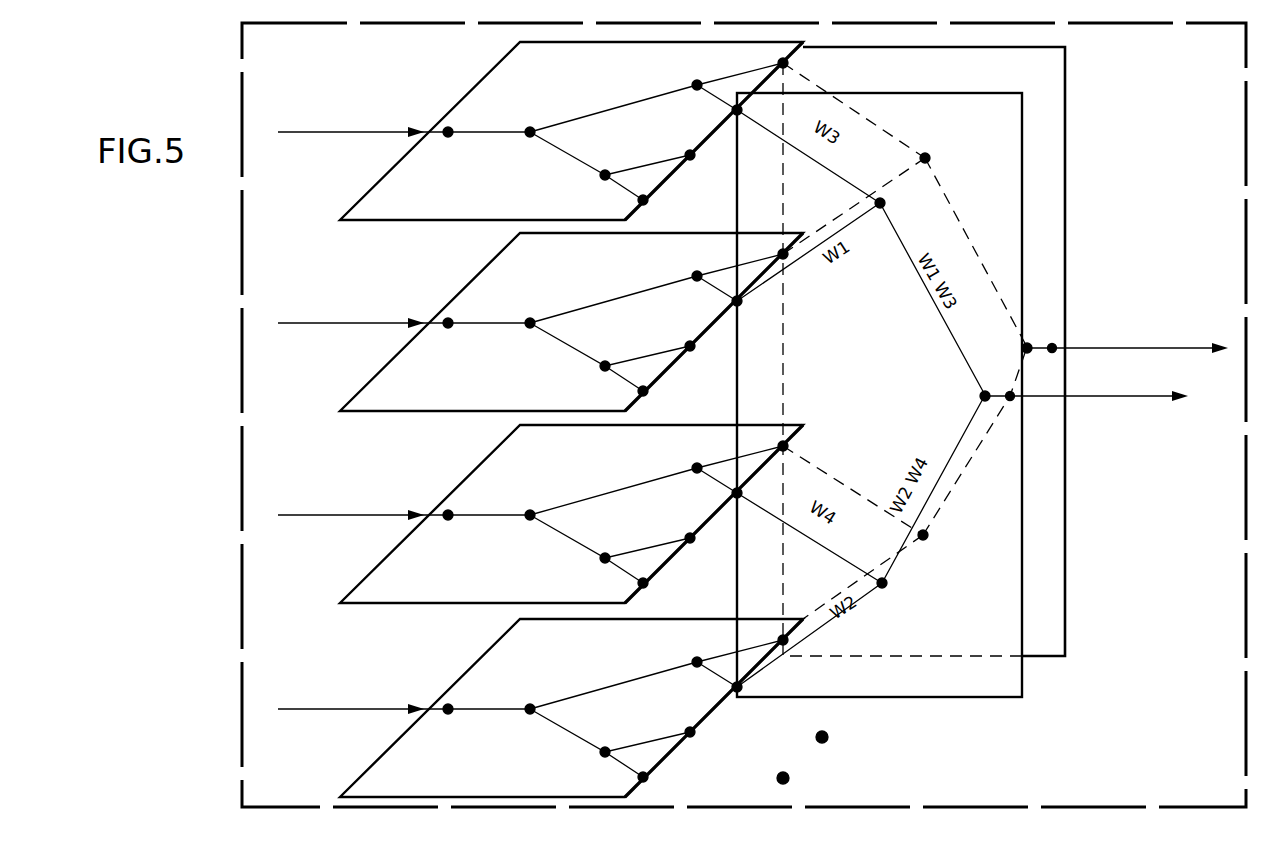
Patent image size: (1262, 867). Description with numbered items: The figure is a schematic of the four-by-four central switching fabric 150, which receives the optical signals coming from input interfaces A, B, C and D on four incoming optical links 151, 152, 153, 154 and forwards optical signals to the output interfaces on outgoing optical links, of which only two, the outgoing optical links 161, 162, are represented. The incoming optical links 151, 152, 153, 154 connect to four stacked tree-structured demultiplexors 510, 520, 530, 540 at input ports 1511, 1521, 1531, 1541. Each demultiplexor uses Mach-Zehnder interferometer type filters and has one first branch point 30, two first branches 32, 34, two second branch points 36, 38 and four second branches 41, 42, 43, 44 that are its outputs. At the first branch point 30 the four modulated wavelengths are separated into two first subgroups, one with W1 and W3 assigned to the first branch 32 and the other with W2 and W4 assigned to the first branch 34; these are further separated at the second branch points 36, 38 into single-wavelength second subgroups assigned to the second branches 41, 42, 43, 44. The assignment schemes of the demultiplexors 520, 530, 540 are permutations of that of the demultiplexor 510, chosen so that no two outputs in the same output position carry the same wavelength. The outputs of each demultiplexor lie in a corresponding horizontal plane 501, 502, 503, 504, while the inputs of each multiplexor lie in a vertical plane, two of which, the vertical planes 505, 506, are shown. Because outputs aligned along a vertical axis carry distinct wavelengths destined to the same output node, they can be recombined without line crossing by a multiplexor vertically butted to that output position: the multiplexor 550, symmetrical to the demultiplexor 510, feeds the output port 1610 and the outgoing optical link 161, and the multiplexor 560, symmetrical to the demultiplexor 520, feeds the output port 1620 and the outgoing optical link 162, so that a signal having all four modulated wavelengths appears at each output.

The central switching fabric 150 is at (243, 418).
The incoming optical link 151 is at (401, 134).
The input port 1511 is at (450, 130).
The incoming optical link 152 is at (401, 325).
The input port 1521 is at (450, 321).
The incoming optical link 153 is at (401, 517).
The input port 1531 is at (450, 513).
The incoming optical link 154 is at (401, 711).
The input port 1541 is at (450, 707).
The outgoing optical link 161 is at (1186, 350).
The output port 1610 is at (1052, 344).
The outgoing optical link 162 is at (1150, 400).
The output port 1620 is at (1012, 400).
The first branch point 30 is at (529, 126).
The first branch 32 is at (666, 96).
The first branch 34 is at (577, 158).
The second branch point 36 is at (699, 80).
The second branch point 38 is at (603, 182).
The second branch 41 is at (770, 66).
The second branch 42 is at (733, 114).
The second branch 43 is at (685, 155).
The second branch 44 is at (640, 199).
The horizontal plane 501 is at (503, 58).
The horizontal plane 502 is at (503, 253).
The horizontal plane 503 is at (503, 446).
The horizontal plane 504 is at (503, 640).
The vertical plane 505 is at (1070, 80).
The vertical plane 506 is at (1028, 154).
The demultiplexor 510 is at (544, 170).
The demultiplexor 520 is at (544, 361).
The demultiplexor 530 is at (544, 555).
The demultiplexor 540 is at (544, 749).
The multiplexor 550 is at (956, 184).
The multiplexor 560 is at (930, 512).